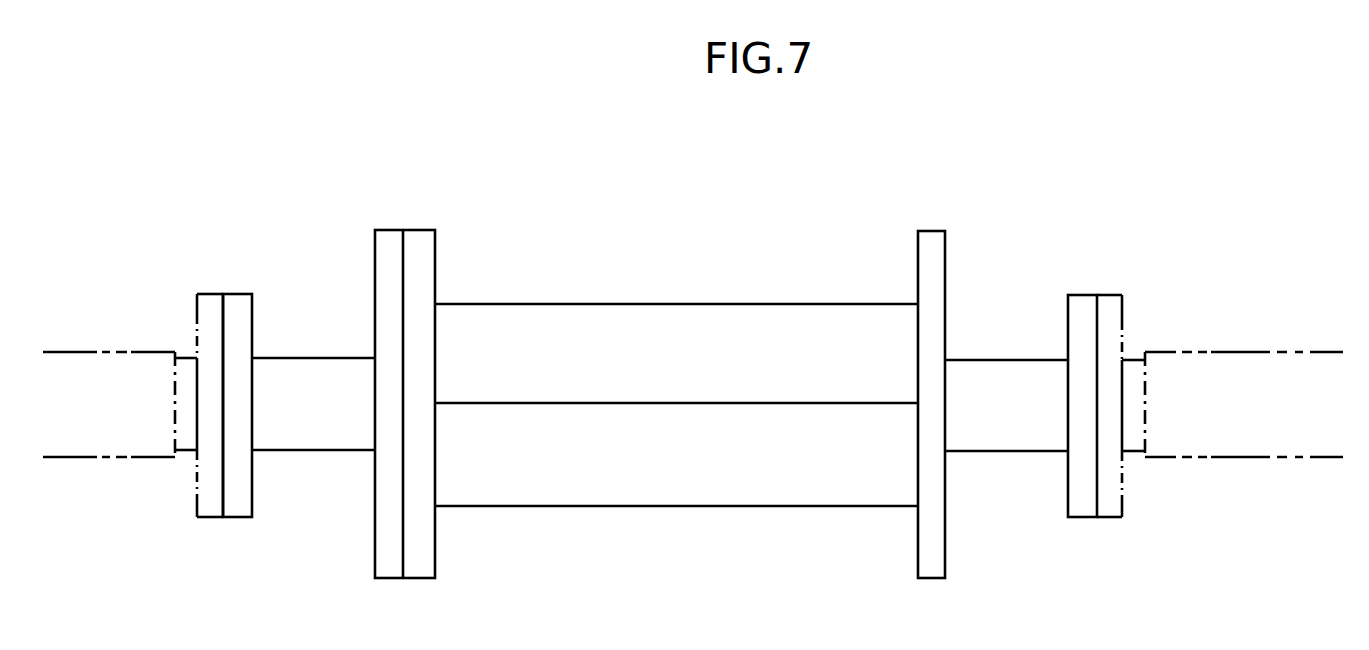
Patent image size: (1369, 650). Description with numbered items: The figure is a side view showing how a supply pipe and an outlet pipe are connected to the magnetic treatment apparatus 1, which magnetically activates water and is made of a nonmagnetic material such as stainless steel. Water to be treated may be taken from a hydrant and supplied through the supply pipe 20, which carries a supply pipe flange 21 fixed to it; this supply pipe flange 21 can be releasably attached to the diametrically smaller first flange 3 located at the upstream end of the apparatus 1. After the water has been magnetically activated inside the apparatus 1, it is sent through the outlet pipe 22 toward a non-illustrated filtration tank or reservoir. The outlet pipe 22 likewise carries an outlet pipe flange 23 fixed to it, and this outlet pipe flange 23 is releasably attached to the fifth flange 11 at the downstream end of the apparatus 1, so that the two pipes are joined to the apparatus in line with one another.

The magnetic treatment apparatus 1 is at (620, 278).
The first flange 3 is at (1068, 327).
The fifth flange 11 is at (252, 478).
The supply pipe 20 is at (1224, 457).
The supply pipe flange 21 is at (1122, 315).
The outlet pipe 22 is at (141, 457).
The outlet pipe flange 23 is at (197, 312).